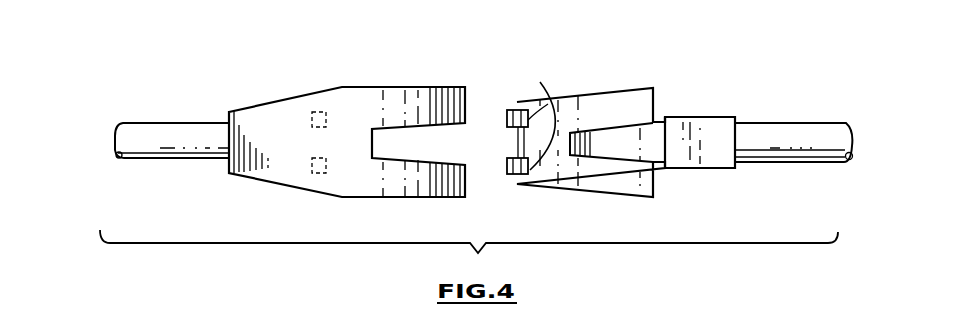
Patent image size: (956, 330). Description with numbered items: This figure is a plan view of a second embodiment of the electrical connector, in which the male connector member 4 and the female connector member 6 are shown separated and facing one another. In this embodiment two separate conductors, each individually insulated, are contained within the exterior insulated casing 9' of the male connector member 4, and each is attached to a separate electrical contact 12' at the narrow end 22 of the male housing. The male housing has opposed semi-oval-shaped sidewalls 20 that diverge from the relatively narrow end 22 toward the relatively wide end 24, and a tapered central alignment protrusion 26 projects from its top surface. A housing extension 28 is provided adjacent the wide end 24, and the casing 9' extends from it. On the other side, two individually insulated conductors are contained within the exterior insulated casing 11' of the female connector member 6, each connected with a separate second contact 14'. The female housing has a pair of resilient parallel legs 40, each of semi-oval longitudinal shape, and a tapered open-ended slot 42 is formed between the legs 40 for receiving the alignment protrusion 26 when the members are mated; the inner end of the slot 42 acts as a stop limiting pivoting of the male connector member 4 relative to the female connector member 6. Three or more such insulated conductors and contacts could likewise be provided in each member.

The male connector member 4 is at (575, 92).
The female connector member 6 is at (243, 95).
The exterior insulated casing 9' is at (794, 124).
The exterior insulated casing 11' is at (164, 158).
The electrical contact 12' is at (539, 114).
The second contact 14' is at (345, 115).
The semi-oval-shaped sidewall 20 is at (620, 88).
The narrow end 22 is at (513, 174).
The wide end 24 is at (653, 92).
The alignment protrusion 26 is at (627, 152).
The housing extension 28 is at (722, 167).
The leg 40 is at (406, 87).
The open-ended slot 42 is at (442, 144).